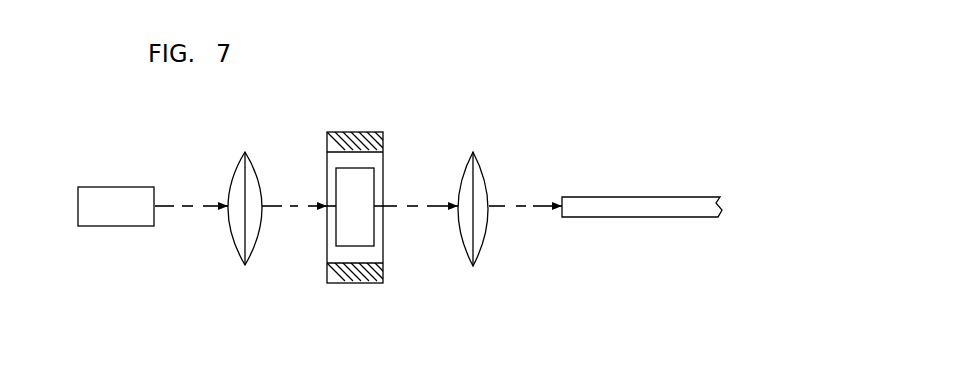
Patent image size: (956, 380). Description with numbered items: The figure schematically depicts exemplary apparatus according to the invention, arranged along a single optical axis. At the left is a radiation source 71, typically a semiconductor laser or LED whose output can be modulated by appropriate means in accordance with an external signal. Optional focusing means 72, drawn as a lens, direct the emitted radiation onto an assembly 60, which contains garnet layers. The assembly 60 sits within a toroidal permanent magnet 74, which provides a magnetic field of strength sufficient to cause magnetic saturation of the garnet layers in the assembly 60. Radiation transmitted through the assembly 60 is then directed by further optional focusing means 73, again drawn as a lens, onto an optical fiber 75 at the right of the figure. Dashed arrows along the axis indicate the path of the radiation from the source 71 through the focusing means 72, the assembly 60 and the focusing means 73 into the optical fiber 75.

The radiation source 71 is at (123, 187).
The focusing means 72 is at (250, 170).
The toroidal permanent magnet 74 is at (365, 132).
The assembly 60 is at (377, 187).
The focusing means 73 is at (480, 170).
The optical fiber 75 is at (660, 197).